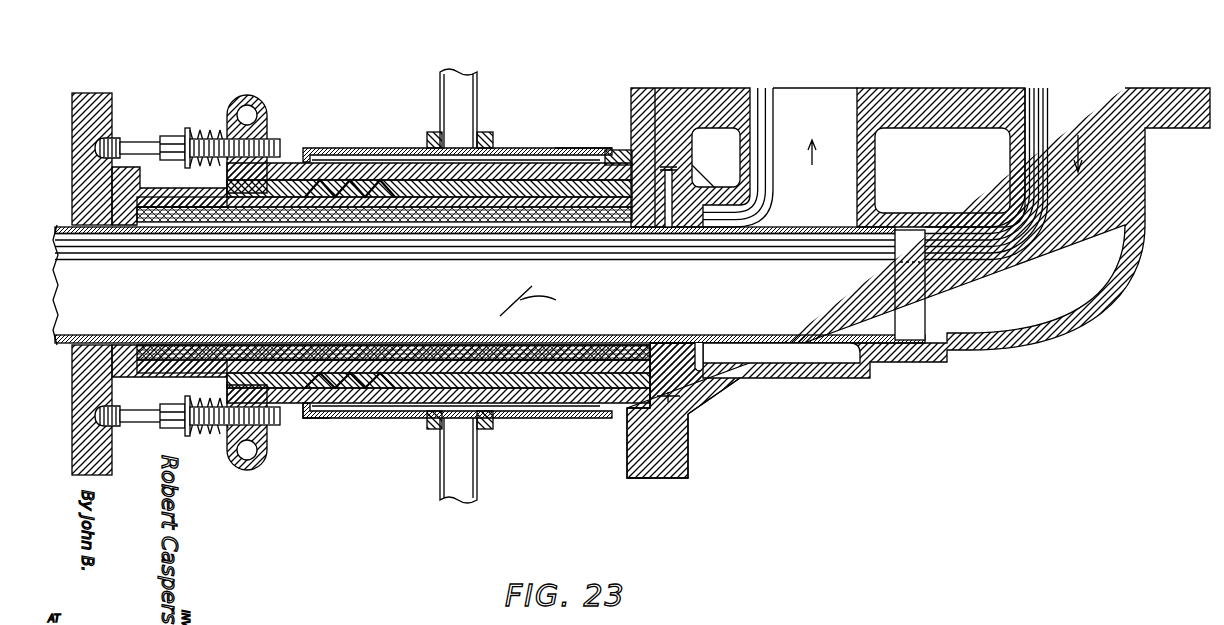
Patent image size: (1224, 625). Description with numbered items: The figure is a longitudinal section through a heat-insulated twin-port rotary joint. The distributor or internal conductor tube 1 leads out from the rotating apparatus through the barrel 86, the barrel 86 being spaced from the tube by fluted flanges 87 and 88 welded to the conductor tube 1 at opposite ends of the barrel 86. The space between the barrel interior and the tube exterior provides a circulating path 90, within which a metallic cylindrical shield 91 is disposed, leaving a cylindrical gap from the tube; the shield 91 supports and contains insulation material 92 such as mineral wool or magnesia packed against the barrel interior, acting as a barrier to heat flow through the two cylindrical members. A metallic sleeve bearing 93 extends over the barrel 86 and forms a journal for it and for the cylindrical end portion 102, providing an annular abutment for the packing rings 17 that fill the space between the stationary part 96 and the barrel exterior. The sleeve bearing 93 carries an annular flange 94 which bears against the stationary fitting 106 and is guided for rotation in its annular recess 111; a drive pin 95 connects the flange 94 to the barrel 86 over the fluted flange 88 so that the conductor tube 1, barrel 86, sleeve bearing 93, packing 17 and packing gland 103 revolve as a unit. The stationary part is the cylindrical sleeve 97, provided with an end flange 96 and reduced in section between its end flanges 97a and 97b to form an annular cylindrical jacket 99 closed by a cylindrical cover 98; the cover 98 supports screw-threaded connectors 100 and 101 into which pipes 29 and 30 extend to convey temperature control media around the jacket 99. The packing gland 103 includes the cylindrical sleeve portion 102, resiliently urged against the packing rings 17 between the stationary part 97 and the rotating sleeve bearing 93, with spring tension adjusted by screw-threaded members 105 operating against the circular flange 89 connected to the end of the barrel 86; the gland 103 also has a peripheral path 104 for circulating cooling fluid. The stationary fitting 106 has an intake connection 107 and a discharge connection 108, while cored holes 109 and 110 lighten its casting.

The internal conductor tube 1 is at (528, 299).
The packing rings 17 is at (340, 232).
The pipe 29 is at (462, 97).
The pipe 30 is at (463, 490).
The barrel 86 is at (180, 345).
The fluted flange 87 is at (91, 233).
The fluted flange 88 is at (725, 340).
The circular flange 89 is at (87, 95).
The circulating path 90 is at (175, 233).
The metallic cylindrical shield 91 is at (332, 348).
The insulation material 92 is at (410, 232).
The sleeve bearing 93 is at (632, 415).
The annular flange 94 is at (692, 436).
The drive pin 95 is at (648, 233).
The end flange 96 is at (630, 452).
The cylindrical sleeve 97 is at (560, 420).
The end flange 97a is at (325, 470).
The end flange 97b is at (612, 150).
The cylindrical cover 98 is at (530, 148).
The annular cylindrical jacket 99 is at (400, 410).
The screw-threaded connector 100 is at (488, 135).
The screw-threaded connector 101 is at (430, 435).
The cylindrical sleeve portion 102 is at (290, 160).
The packing gland 103 is at (250, 95).
The peripheral path 104 is at (238, 468).
The screw-threaded members 105 is at (270, 420).
The stationary fitting 106 is at (795, 378).
The intake connection 107 is at (1088, 100).
The discharge connection 108 is at (820, 110).
The cored hole 109 is at (941, 157).
The cored hole 110 is at (765, 140).
The annular recess 111 is at (683, 182).